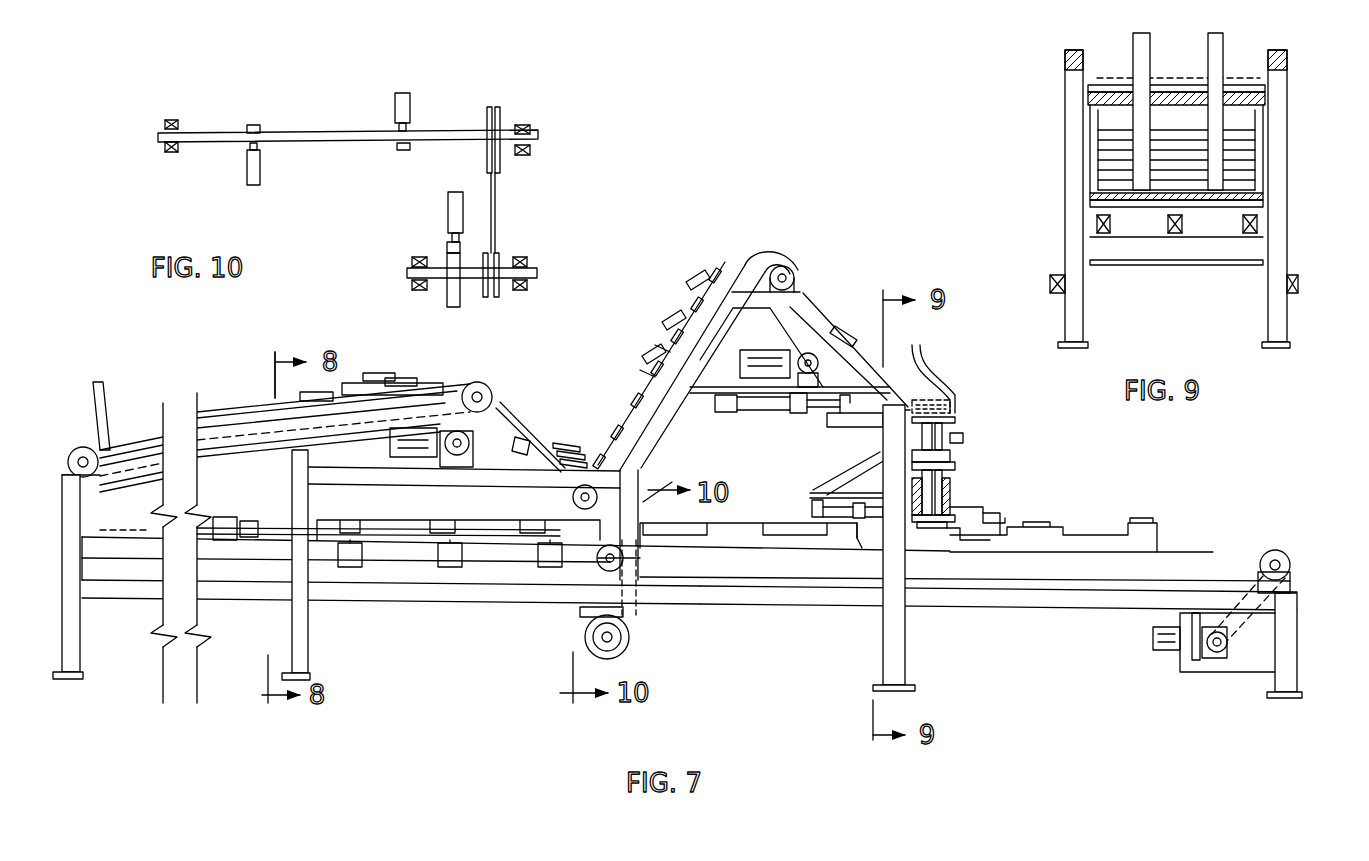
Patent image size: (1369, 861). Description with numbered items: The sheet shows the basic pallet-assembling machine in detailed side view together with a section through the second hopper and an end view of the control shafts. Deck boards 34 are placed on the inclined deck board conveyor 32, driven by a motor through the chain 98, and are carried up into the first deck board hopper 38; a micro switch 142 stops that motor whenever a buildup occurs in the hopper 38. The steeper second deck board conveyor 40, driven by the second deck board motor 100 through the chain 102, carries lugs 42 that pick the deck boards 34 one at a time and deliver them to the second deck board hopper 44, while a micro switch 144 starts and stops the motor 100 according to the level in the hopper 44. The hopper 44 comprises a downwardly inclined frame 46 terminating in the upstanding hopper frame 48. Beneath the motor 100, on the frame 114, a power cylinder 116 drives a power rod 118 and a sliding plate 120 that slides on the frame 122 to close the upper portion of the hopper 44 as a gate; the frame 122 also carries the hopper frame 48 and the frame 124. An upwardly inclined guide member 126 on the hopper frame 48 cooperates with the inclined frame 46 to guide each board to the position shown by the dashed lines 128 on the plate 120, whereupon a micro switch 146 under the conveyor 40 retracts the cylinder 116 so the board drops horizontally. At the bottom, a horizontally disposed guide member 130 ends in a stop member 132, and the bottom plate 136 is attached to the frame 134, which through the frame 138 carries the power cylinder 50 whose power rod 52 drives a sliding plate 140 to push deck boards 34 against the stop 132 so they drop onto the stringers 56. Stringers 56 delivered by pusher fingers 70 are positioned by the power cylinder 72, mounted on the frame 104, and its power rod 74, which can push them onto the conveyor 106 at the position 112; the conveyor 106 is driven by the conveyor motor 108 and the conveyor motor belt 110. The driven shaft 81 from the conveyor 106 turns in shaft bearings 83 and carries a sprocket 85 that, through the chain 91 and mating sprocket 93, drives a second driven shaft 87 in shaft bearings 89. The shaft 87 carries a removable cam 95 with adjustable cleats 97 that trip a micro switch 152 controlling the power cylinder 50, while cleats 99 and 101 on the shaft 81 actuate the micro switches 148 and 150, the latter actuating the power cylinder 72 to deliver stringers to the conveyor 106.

In FIG. 7, the deck board conveyor 32 is at (158, 437).
In FIG. 7, the deck boards 34 is at (398, 381).
In FIG. 7, the first deck board hopper 38 is at (580, 410).
In FIG. 7, the second deck board conveyor 40 is at (762, 263).
In FIG. 7, the lugs 42 is at (655, 347).
In FIG. 7, the second deck board hopper 44 is at (957, 328).
In FIG. 7, the downwardly inclined frame 46 is at (893, 378).
In FIG. 7, the hopper frame 48 is at (950, 456).
In FIG. 7, the power cylinder 50 is at (817, 527).
In FIG. 7, the power rod 52 is at (862, 546).
In FIG. 7, the stringers 56 is at (695, 530).
In FIG. 9, the stringers 56 is at (1112, 224).
In FIG. 7, the pusher fingers 70 is at (350, 520).
In FIG. 7, the power cylinder 72 is at (125, 528).
In FIG. 7, the power rod 74 is at (252, 521).
In FIG. 7, the driven shaft 81 is at (641, 560).
In FIG. 10, the driven shaft 81 is at (448, 130).
In FIG. 10, the shaft bearings 83 is at (165, 122).
In FIG. 7, the sprocket 85 is at (598, 572).
In FIG. 10, the sprocket 85 is at (500, 105).
In FIG. 7, the second driven shaft 87 is at (630, 637).
In FIG. 10, the second driven shaft 87 is at (522, 272).
In FIG. 10, the shaft bearings 89 is at (412, 285).
In FIG. 7, the chain 91 is at (629, 577).
In FIG. 10, the chain 91 is at (496, 210).
In FIG. 10, the mating sprocket 93 is at (500, 290).
In FIG. 10, the removable cam 95 is at (448, 290).
In FIG. 10, the adjustable cleats 97 is at (447, 247).
In FIG. 7, the chain 98 is at (518, 414).
In FIG. 10, the cleat 99 is at (250, 123).
In FIG. 7, the second deck board motor 100 is at (792, 270).
In FIG. 10, the cleat 101 is at (402, 152).
In FIG. 7, the chain 102 is at (805, 336).
In FIG. 7, the frame 104 is at (262, 588).
In FIG. 7, the conveyor 106 is at (793, 580).
In FIG. 9, the conveyor 106 is at (1148, 265).
In FIG. 7, the conveyor motor 108 is at (1155, 645).
In FIG. 7, the conveyor motor belt 110 is at (1297, 641).
In FIG. 7, the stringer position 112 is at (739, 508).
In FIG. 7, the frame 114 is at (777, 408).
In FIG. 7, the power cylinder 116 is at (763, 412).
In FIG. 7, the power rod 118 is at (888, 370).
In FIG. 7, the sliding plate 120 is at (838, 426).
In FIG. 9, the sliding plate 120 is at (1122, 85).
In FIG. 7, the frame 122 is at (955, 420).
In FIG. 7, the frame 124 is at (955, 466).
In FIG. 7, the upwardly inclined guide member 126 is at (930, 376).
In FIG. 9, the upwardly inclined guide member 126 is at (1072, 58).
In FIG. 7, the deck board position 128 is at (955, 408).
In FIG. 9, the deck board position 128 is at (1195, 80).
In FIG. 7, the horizontally disposed guide member 130 is at (966, 508).
In FIG. 7, the stop member 132 is at (1005, 522).
In FIG. 7, the frame 134 is at (907, 647).
In FIG. 9, the frame 134 is at (1272, 255).
In FIG. 7, the bottom plate 136 is at (975, 538).
In FIG. 9, the bottom plate 136 is at (1095, 215).
In FIG. 7, the frame 138 is at (817, 490).
In FIG. 7, the sliding plate 140 is at (920, 528).
In FIG. 9, the sliding plate 140 is at (1092, 200).
In FIG. 7, the micro switch 142 is at (540, 434).
In FIG. 7, the micro switch 144 is at (963, 438).
In FIG. 7, the micro switch 146 is at (668, 336).
In FIG. 10, the micro switch 148 is at (247, 170).
In FIG. 10, the micro switch 150 is at (395, 105).
In FIG. 10, the micro switch 152 is at (450, 220).